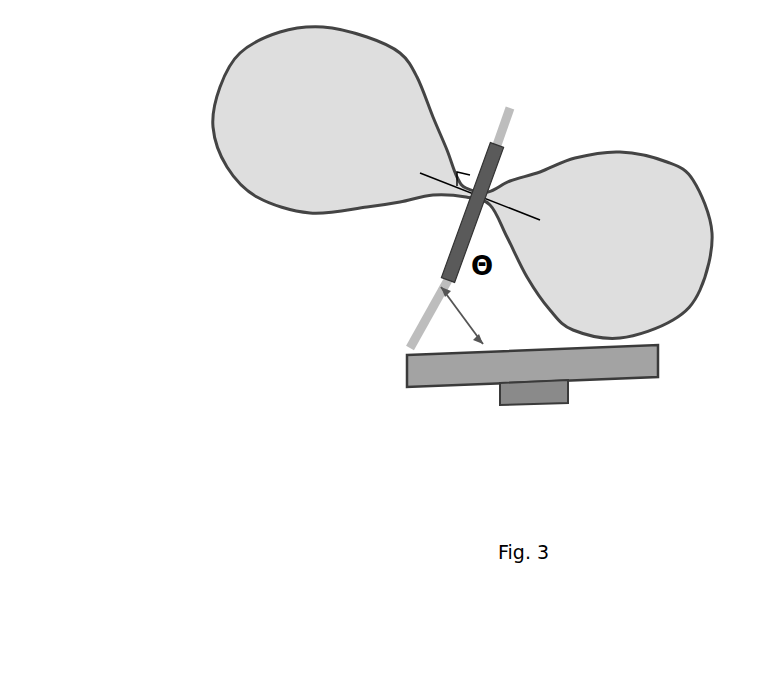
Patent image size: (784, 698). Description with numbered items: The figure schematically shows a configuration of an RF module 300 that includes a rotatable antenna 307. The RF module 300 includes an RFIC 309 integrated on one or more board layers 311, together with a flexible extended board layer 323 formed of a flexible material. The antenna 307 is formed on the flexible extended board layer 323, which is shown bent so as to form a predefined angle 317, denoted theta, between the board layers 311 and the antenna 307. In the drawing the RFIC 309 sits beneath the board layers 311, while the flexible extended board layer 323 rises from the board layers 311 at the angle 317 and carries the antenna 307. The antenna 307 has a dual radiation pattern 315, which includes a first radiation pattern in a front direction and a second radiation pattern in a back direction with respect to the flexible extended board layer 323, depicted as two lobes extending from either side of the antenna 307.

The RF module 300 is at (280, 295).
The rotatable antenna 307 is at (449, 251).
The RFIC 309 is at (533, 407).
The board layers 311 is at (617, 381).
The dual radiation pattern 315 is at (712, 258).
The predefined angle 317 is at (480, 338).
The flexible extended board layer 323 is at (427, 320).